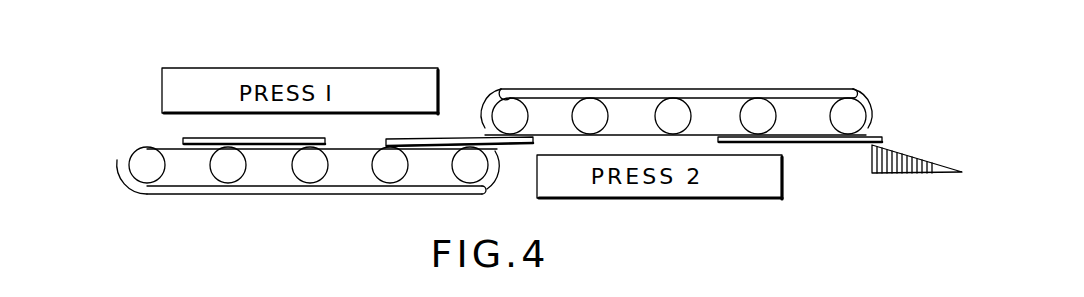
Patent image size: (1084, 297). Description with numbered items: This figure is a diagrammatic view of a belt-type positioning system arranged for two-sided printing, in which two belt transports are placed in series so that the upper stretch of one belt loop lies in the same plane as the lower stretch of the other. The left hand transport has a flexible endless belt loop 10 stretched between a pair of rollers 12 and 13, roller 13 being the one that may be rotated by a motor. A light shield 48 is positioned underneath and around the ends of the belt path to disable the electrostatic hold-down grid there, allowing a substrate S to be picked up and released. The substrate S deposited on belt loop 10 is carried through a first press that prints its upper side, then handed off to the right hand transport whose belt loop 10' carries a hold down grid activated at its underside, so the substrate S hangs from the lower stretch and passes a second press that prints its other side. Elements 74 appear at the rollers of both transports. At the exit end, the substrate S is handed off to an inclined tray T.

The belt loop 10 is at (308, 194).
The belt loop of right hand transport 10' is at (676, 93).
The roller 12 is at (147, 176).
The roller 13 is at (473, 172).
The light shield 48 is at (266, 195).
The roller 74 is at (312, 172).
The substrate S is at (179, 137).
The inclined tray T is at (900, 174).